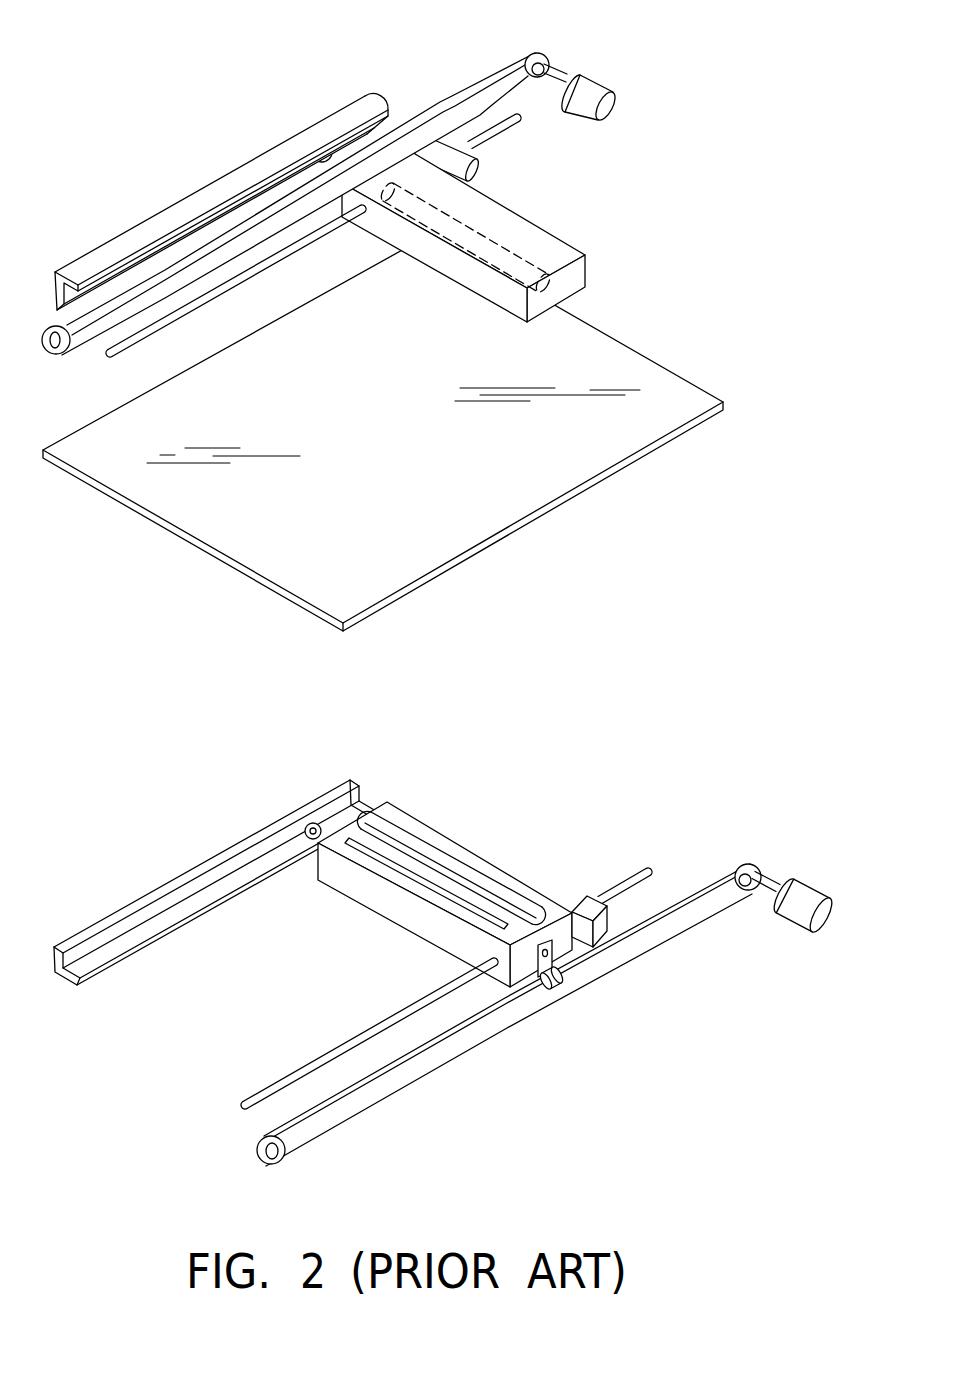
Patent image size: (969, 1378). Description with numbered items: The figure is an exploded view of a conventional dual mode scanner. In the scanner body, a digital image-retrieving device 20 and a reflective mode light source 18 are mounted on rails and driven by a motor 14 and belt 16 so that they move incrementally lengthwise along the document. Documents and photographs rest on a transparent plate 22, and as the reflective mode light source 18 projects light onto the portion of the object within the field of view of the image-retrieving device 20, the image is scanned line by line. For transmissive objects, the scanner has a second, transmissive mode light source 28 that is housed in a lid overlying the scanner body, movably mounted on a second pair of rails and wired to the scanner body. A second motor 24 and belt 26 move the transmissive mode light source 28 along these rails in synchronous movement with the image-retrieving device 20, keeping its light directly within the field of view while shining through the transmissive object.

The motor 14 is at (808, 897).
The belt 16 is at (617, 963).
The reflective mode light source 18 is at (482, 868).
The digital image-retrieving device 20 is at (417, 877).
The transparent plate 22 is at (678, 380).
The second motor 24 is at (585, 82).
The belt 26 is at (467, 90).
The transmissive mode light source 28 is at (522, 227).